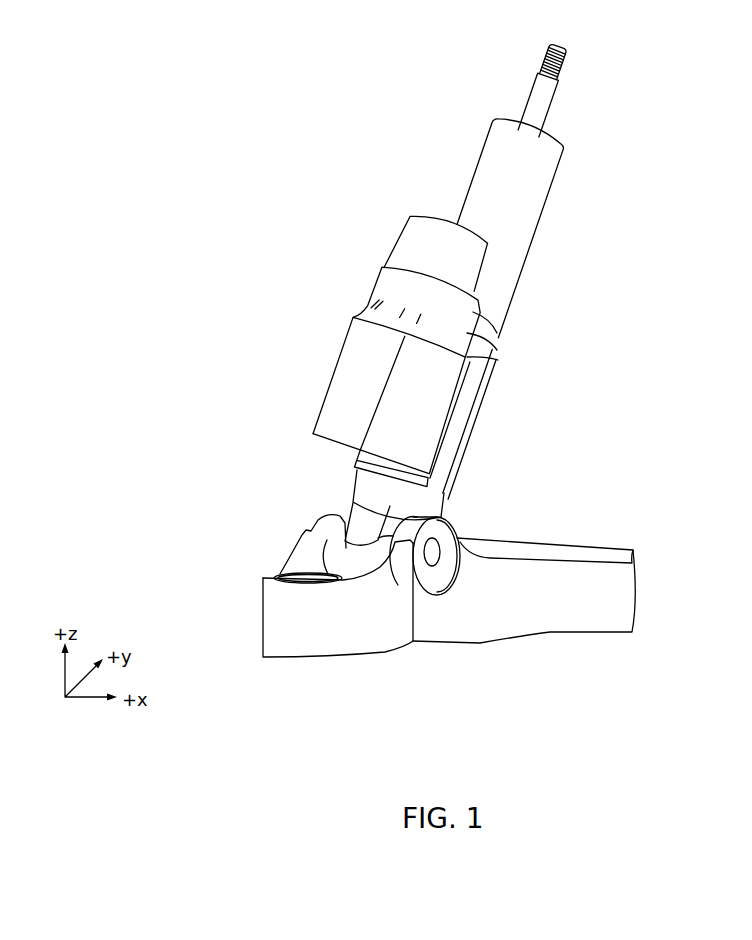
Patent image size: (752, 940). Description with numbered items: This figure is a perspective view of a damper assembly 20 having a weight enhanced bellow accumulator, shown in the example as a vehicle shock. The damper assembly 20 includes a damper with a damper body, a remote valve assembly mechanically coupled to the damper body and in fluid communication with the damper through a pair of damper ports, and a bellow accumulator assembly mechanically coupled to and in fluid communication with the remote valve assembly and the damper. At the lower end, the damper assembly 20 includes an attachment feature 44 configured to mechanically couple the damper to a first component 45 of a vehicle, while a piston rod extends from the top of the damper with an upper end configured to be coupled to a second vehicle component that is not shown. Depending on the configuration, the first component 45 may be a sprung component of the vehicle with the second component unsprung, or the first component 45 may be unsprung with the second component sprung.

The damper assembly 20 is at (290, 78).
The attachment feature 44 is at (367, 530).
The first component 45 is at (568, 532).